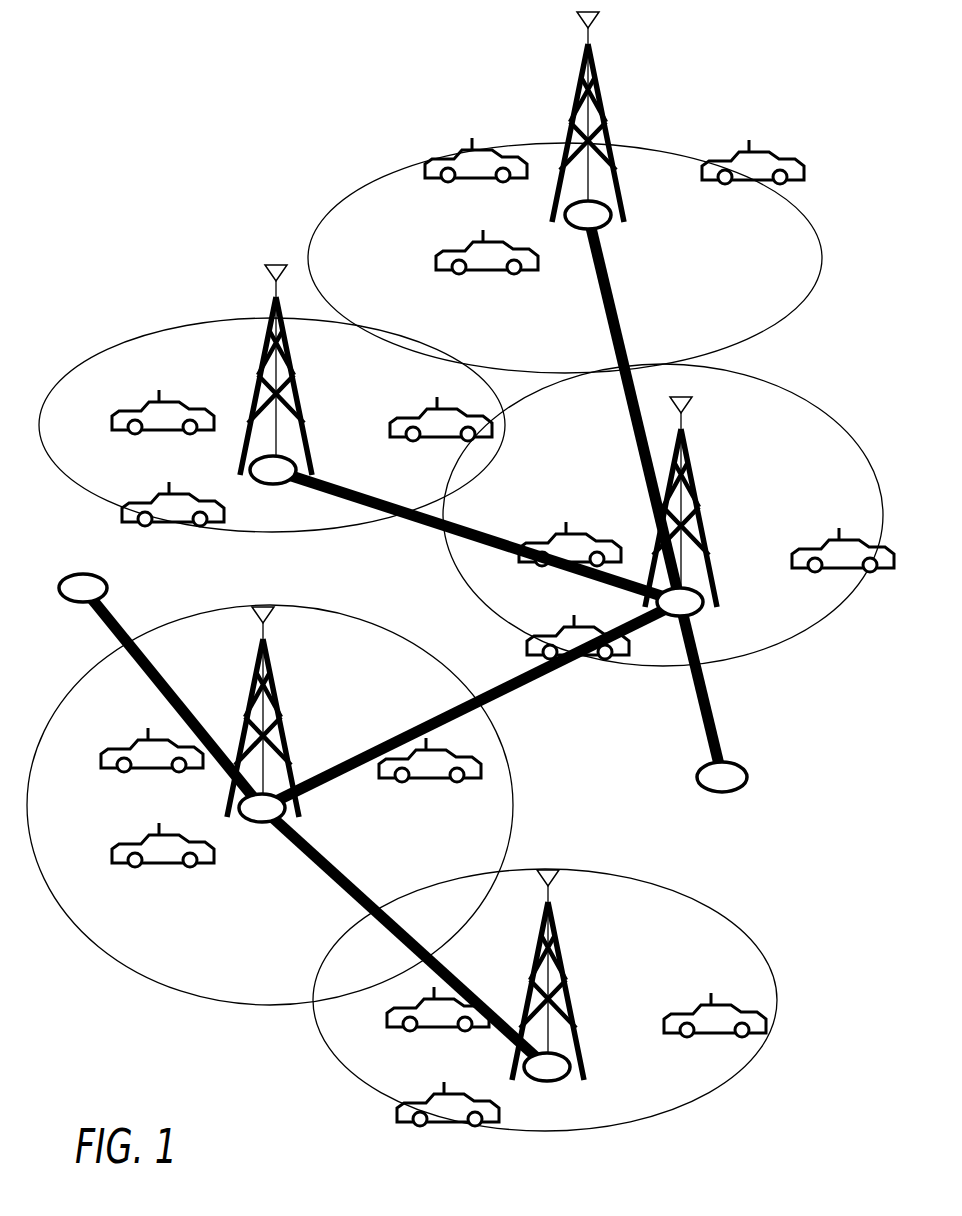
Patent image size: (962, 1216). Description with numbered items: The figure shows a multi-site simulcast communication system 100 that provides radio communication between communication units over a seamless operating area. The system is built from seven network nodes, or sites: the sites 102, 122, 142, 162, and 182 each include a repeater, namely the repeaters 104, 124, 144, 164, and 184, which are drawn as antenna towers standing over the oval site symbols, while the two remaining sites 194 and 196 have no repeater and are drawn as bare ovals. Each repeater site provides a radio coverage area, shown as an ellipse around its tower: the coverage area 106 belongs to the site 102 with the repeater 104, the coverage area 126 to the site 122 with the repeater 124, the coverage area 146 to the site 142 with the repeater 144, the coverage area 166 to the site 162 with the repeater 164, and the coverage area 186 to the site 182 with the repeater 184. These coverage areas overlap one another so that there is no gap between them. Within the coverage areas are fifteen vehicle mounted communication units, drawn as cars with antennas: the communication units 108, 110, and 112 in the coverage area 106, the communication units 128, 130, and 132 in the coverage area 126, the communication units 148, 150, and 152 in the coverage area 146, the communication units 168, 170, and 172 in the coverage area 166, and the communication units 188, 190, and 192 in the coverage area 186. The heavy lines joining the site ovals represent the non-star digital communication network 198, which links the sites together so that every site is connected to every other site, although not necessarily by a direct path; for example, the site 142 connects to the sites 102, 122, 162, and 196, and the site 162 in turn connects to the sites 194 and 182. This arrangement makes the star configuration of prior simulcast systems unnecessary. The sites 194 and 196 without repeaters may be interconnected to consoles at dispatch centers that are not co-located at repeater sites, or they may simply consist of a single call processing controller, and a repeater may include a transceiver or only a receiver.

The multi-site simulcast communication system 100 is at (150, 109).
The site 102 is at (608, 228).
The repeater 104 is at (583, 75).
The coverage area 106 is at (378, 180).
The vehicle mounted communication unit 108 is at (460, 153).
The vehicle mounted communication unit 110 is at (467, 250).
The vehicle mounted communication unit 112 is at (747, 152).
The site 122 is at (262, 485).
The repeater 124 is at (265, 335).
The coverage area 126 is at (93, 355).
The vehicle mounted communication unit 128 is at (130, 413).
The vehicle mounted communication unit 130 is at (150, 502).
The vehicle mounted communication unit 132 is at (433, 405).
The site 142 is at (703, 608).
The repeater 144 is at (688, 450).
The coverage area 146 is at (468, 588).
The vehicle mounted communication unit 148 is at (565, 528).
The vehicle mounted communication unit 150 is at (558, 637).
The vehicle mounted communication unit 152 is at (842, 535).
The site 162 is at (283, 813).
The repeater 164 is at (258, 667).
The coverage area 166 is at (52, 717).
The vehicle mounted communication unit 168 is at (125, 752).
The vehicle mounted communication unit 170 is at (143, 840).
The vehicle mounted communication unit 172 is at (425, 782).
The site 182 is at (567, 1077).
The repeater 184 is at (538, 938).
The coverage area 186 is at (330, 1058).
The vehicle mounted communication unit 188 is at (435, 1030).
The vehicle mounted communication unit 190 is at (442, 1123).
The vehicle mounted communication unit 192 is at (707, 1007).
The site 194 is at (67, 575).
The site 196 is at (702, 765).
The non-star digital communication network 198 is at (518, 690).